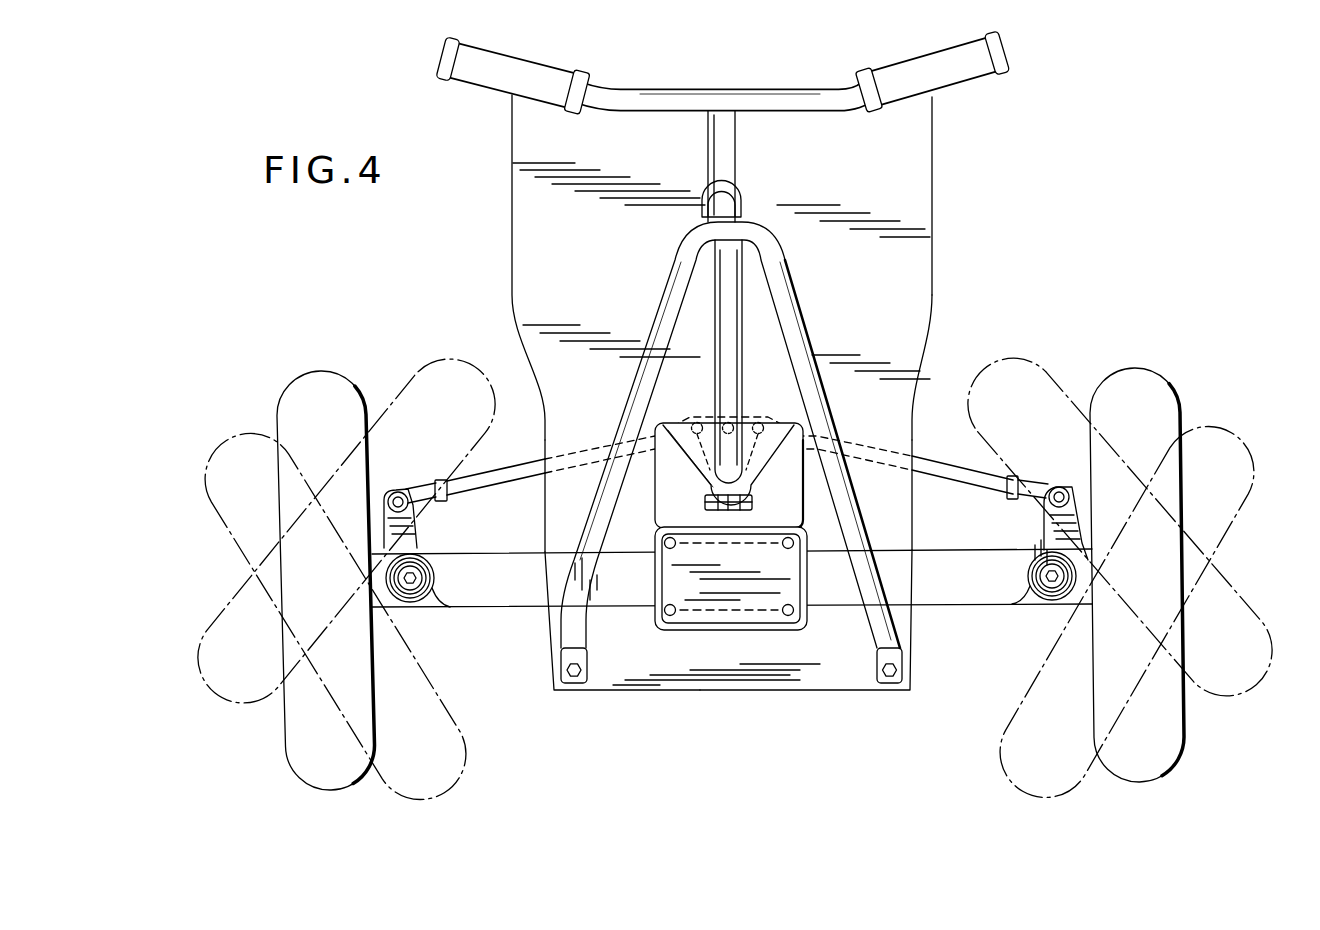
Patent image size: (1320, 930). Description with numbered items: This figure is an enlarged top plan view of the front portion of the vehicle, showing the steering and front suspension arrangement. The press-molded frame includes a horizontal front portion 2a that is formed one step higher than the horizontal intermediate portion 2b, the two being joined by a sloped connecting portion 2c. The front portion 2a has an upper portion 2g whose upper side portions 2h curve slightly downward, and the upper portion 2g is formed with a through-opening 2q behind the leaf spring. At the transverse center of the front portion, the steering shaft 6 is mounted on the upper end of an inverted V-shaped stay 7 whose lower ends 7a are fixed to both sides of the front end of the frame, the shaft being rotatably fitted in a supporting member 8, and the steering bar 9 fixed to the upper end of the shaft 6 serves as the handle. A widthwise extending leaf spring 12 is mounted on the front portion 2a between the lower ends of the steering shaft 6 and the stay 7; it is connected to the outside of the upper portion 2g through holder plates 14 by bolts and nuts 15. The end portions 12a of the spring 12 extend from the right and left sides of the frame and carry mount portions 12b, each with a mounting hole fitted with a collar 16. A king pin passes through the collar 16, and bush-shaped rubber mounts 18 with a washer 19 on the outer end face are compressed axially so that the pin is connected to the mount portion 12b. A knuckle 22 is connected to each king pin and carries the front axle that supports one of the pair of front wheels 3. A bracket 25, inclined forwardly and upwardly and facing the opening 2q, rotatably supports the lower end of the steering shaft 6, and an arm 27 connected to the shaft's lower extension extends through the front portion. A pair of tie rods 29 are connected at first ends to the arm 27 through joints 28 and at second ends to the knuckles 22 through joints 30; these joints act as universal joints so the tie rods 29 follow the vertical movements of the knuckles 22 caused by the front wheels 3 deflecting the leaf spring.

The front portion 2a is at (752, 675).
The intermediate portion 2b is at (932, 178).
The sloped connecting portion 2c is at (918, 345).
The upper portion 2g is at (692, 640).
The upper side portions 2h is at (553, 548).
The through-opening 2q is at (805, 490).
The front wheels 3 is at (326, 385).
The steering shaft 6 is at (721, 152).
The inverted V-shaped stay 7 is at (789, 305).
The lower ends 7a is at (565, 672).
The supporting member 8 is at (738, 207).
The steering bar 9 is at (822, 108).
The leaf spring 12 is at (950, 604).
The end portions 12a is at (483, 606).
The mount portions 12b is at (424, 555).
The holder plates 14 is at (735, 618).
The bolts and nuts 15 is at (670, 616).
The collars 16 is at (425, 603).
The rubber mounts 18 is at (410, 604).
The washer 19 is at (433, 572).
The knuckle 22 is at (393, 517).
The bracket 25 is at (709, 472).
The arm 27 is at (753, 502).
The joints 28 is at (698, 445).
The tie rods 29 is at (540, 472).
The joints 30 is at (422, 488).